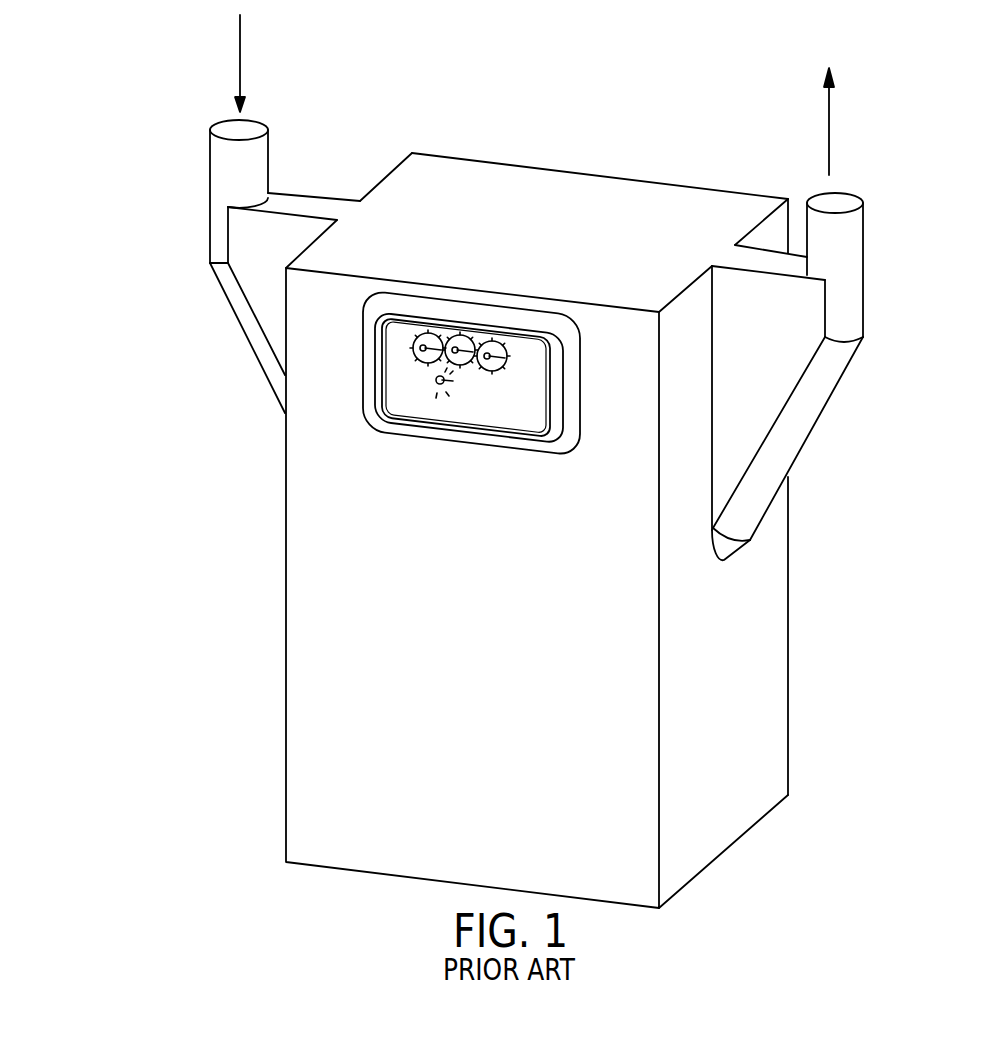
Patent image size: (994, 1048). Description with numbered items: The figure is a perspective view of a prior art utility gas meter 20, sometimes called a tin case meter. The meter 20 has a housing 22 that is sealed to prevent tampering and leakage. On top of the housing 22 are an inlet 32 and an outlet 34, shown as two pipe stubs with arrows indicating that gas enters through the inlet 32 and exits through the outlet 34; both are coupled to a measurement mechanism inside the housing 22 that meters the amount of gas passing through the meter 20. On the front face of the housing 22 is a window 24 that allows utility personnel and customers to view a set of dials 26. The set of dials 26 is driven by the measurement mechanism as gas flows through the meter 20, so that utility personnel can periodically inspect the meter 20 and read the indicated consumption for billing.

The utility gas meter 20 is at (81, 119).
The housing 22 is at (286, 824).
The window 24 is at (495, 410).
The set of dials 26 is at (405, 382).
The inlet 32 is at (210, 175).
The outlet 34 is at (863, 262).